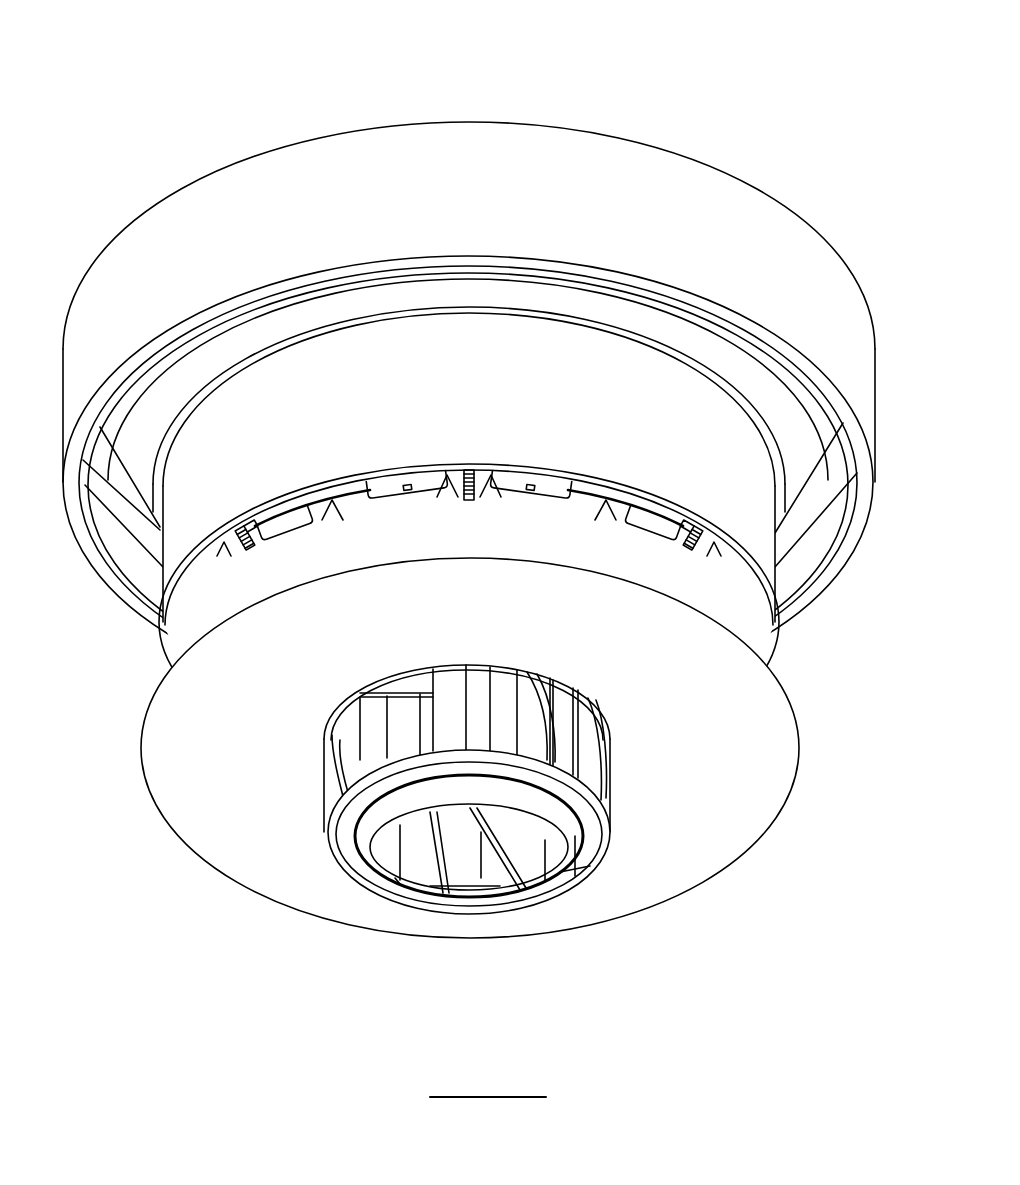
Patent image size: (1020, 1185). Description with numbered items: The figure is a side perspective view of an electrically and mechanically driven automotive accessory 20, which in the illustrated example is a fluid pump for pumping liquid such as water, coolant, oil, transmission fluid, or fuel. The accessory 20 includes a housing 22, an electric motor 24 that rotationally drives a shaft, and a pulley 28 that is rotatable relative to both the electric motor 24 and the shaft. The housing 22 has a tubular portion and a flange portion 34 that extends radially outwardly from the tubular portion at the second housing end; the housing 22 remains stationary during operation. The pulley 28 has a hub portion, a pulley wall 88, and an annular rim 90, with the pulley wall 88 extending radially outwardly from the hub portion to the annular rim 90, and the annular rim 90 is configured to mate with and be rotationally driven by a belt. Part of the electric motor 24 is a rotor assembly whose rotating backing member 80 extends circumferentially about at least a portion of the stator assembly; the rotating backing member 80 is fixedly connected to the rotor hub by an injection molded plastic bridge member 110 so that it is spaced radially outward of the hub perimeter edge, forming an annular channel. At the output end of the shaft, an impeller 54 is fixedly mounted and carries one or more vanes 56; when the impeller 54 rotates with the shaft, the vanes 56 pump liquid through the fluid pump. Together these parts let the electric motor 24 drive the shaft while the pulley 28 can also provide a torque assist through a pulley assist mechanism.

The electrically and mechanically driven automotive accessory 20 is at (178, 104).
The housing 22 is at (140, 706).
The electric motor 24 is at (178, 542).
The pulley 28 is at (130, 278).
The flange portion 34 is at (735, 797).
The impeller 54 is at (346, 843).
The vanes 56 is at (457, 870).
The rotating backing member 80 is at (728, 503).
The pulley wall 88 is at (126, 412).
The annular rim 90 is at (655, 190).
The bridge member 110 is at (680, 337).